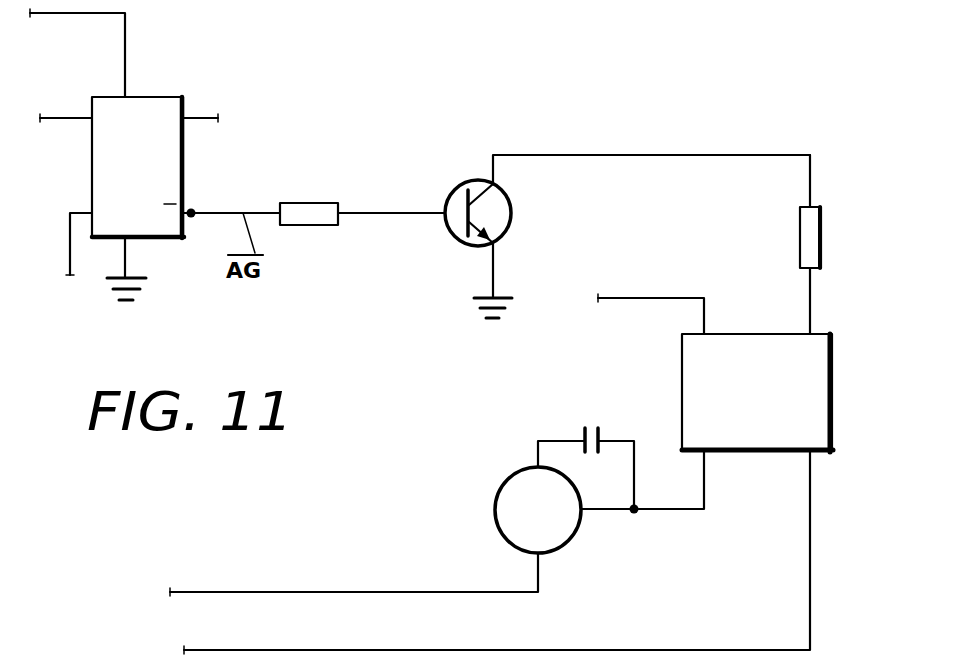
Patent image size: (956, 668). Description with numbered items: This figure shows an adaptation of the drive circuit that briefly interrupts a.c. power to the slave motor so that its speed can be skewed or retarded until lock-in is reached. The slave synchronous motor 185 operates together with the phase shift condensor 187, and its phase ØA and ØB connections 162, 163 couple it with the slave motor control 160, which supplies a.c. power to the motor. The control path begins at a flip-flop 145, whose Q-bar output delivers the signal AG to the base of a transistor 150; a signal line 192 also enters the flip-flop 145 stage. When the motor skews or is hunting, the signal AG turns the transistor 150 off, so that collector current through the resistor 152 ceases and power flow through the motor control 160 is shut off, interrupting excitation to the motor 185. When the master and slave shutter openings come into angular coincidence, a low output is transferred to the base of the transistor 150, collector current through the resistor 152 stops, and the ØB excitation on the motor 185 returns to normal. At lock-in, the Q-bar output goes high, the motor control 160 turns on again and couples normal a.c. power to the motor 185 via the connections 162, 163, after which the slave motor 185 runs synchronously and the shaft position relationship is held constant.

The data input line 192 is at (127, 50).
The flip-flop 145 is at (145, 110).
The transistor 150 is at (446, 197).
The resistor 152 is at (812, 243).
The slave motor control 160 is at (813, 375).
The phase connection 162 is at (704, 490).
The phase connection 163 is at (811, 508).
The phase shift condensor 187 is at (592, 430).
The SLAVE synchronous motor 185 is at (497, 503).